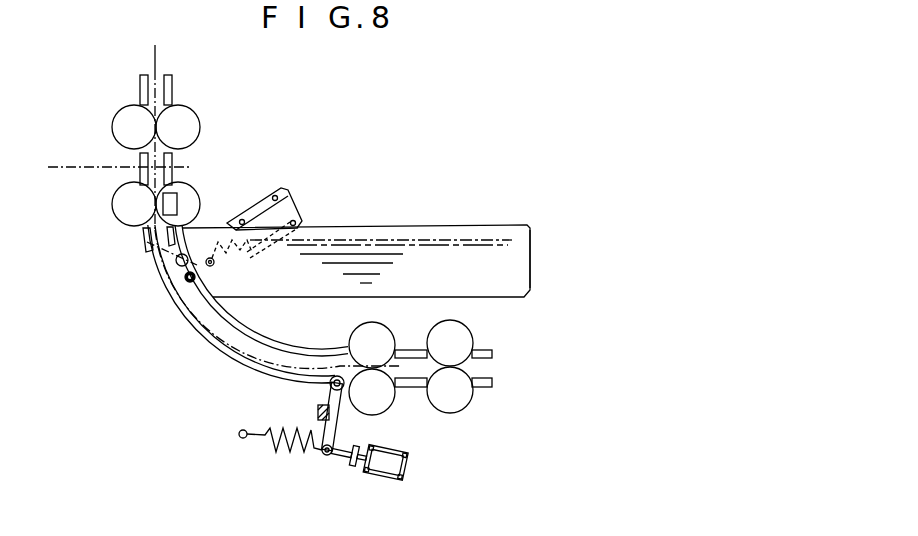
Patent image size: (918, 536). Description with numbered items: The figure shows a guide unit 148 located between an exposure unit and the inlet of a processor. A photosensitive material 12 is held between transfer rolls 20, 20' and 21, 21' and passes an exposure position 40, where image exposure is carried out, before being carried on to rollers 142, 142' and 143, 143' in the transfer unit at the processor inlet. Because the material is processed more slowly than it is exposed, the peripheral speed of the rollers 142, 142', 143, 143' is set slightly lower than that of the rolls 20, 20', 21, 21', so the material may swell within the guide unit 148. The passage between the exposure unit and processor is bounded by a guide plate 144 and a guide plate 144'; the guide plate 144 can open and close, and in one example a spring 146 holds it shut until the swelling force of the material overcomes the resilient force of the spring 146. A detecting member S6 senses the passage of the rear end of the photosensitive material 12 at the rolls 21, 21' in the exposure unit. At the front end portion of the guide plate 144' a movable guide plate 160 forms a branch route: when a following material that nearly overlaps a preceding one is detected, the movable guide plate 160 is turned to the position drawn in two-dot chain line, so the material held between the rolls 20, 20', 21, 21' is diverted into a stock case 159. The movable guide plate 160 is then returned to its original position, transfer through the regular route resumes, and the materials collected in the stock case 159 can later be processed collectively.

The guide unit 148 is at (349, 175).
The transfer roll 20 is at (107, 127).
The transfer roll 20' is at (208, 125).
The transfer roll 21 is at (107, 204).
The transfer roll 21' is at (209, 188).
The exposure position 40 is at (176, 167).
The detecting member S6 is at (178, 203).
The movable guide plate 160 is at (226, 225).
The photosensitive material 12 is at (477, 240).
The stock case 159 is at (528, 252).
The guide plate 144 is at (241, 305).
The guide plate 144' is at (261, 290).
The roller 142 is at (396, 405).
The roller 142' is at (398, 333).
The roller 143 is at (474, 404).
The roller 143' is at (484, 332).
The spring 146 is at (280, 455).